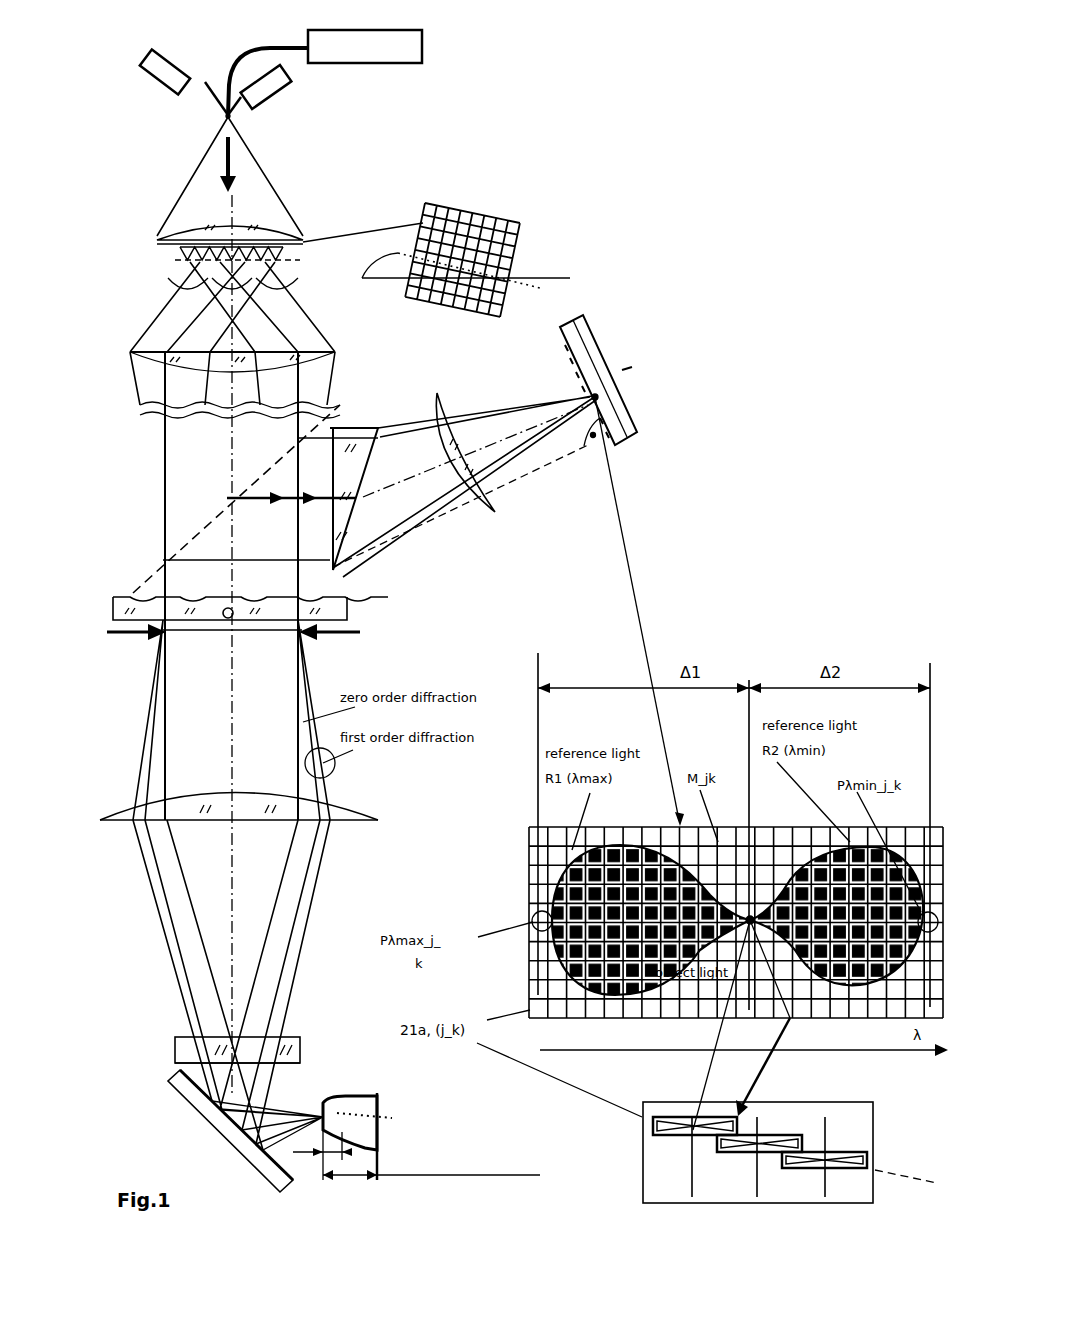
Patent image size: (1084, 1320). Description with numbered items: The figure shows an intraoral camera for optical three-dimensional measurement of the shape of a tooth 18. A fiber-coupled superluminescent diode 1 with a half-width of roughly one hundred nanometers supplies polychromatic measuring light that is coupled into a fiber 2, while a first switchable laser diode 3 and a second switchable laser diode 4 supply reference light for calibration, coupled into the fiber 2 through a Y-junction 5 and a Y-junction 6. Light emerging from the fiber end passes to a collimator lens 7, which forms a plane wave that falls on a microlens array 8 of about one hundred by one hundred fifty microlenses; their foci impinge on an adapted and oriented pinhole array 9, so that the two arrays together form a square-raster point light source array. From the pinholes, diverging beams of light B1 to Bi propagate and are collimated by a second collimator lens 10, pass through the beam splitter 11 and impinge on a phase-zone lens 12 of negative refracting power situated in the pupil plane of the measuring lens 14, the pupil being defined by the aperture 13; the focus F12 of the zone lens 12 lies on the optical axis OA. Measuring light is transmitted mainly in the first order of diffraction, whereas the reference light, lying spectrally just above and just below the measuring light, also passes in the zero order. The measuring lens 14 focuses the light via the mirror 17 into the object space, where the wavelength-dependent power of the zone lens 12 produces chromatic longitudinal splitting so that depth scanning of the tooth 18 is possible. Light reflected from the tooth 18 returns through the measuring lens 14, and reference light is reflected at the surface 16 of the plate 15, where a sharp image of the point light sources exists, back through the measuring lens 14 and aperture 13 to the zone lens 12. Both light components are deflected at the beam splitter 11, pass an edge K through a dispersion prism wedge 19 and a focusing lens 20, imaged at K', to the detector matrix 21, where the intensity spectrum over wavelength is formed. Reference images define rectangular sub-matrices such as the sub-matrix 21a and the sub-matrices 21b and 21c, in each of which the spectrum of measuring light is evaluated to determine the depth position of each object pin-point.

The superluminescent diode 1 is at (388, 40).
The fiber 2 is at (240, 60).
The first switchable laser diode 3 is at (158, 65).
The second switchable laser diode 4 is at (263, 90).
The Y-junction 5 is at (222, 112).
The Y-junction 6 is at (228, 115).
The collimator lens 7 is at (157, 240).
The microlens array 8 is at (332, 239).
The pinhole array 9 is at (185, 261).
The second collimator lens 10 is at (130, 353).
The beam splitter 11 is at (148, 579).
The phase-zone lens 12 is at (347, 602).
The aperture 13 is at (360, 632).
The measuring lens 14 is at (102, 818).
The plate 15 is at (175, 1043).
The surface 16 is at (175, 1063).
The mirror 17 is at (207, 1108).
The tooth 18 is at (377, 1137).
The dispersion prism wedge 19 is at (348, 428).
The focusing lens 20 is at (496, 508).
The detector matrix 21 is at (610, 413).
The sub-matrix 21a is at (627, 1135).
The sub-matrix 21b is at (718, 1145).
The sub-matrix 21c is at (783, 1162).
The diverging beam of light B1 is at (185, 279).
The diverging beam of light Bi is at (272, 281).
The focal point F12 is at (240, 610).
The edge K is at (389, 551).
The image of edge K' is at (615, 452).
The optical axis OA is at (213, 646).